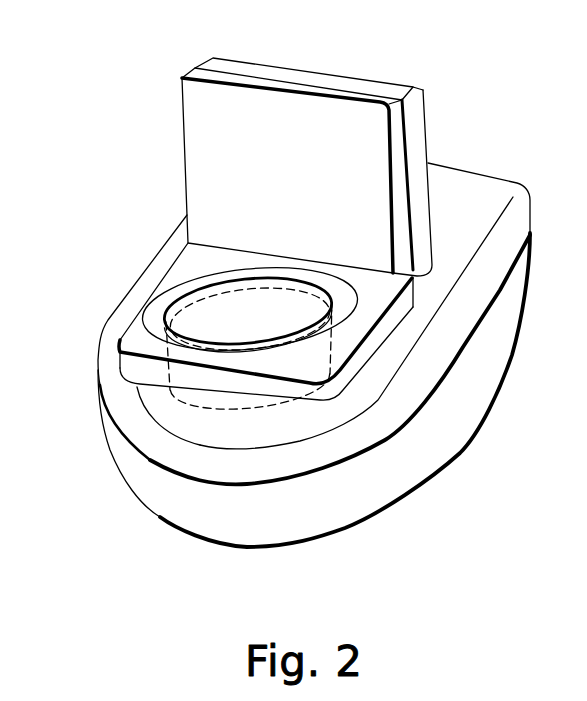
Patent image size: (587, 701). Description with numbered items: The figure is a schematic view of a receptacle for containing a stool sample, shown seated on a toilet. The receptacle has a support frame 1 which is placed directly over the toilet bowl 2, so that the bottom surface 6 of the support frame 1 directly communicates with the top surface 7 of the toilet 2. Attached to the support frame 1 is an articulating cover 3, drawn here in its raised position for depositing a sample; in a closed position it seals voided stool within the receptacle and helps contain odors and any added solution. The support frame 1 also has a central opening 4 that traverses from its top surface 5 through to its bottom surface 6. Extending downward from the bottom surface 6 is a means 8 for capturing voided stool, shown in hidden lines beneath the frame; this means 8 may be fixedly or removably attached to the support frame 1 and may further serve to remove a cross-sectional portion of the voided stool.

The support frame 1 is at (380, 333).
The toilet bowl 2 is at (199, 552).
The articulating cover 3 is at (301, 62).
The central opening 4 is at (205, 322).
The top surface 5 is at (388, 293).
The bottom surface 6 is at (136, 393).
The top surface of the toilet 7 is at (297, 430).
The means for capturing voided stool 8 is at (170, 391).